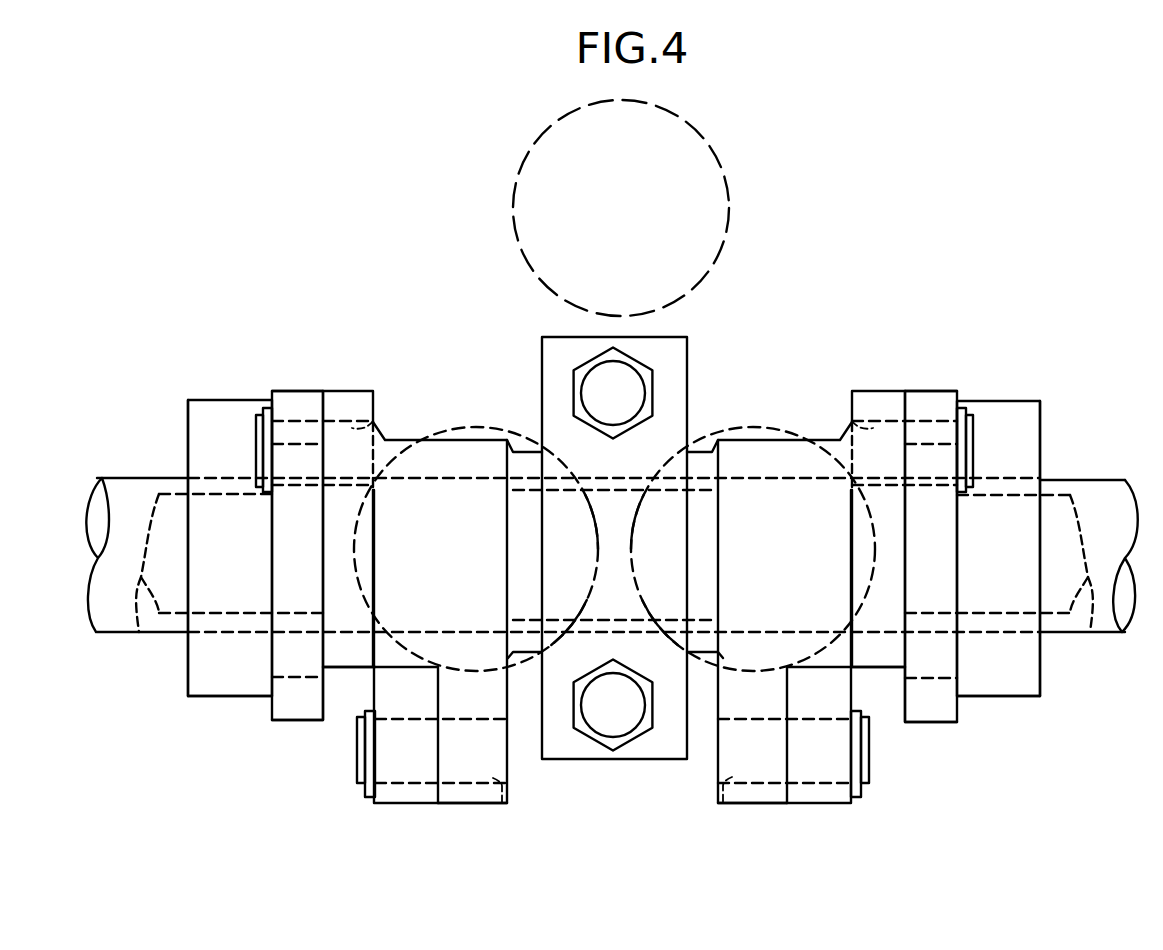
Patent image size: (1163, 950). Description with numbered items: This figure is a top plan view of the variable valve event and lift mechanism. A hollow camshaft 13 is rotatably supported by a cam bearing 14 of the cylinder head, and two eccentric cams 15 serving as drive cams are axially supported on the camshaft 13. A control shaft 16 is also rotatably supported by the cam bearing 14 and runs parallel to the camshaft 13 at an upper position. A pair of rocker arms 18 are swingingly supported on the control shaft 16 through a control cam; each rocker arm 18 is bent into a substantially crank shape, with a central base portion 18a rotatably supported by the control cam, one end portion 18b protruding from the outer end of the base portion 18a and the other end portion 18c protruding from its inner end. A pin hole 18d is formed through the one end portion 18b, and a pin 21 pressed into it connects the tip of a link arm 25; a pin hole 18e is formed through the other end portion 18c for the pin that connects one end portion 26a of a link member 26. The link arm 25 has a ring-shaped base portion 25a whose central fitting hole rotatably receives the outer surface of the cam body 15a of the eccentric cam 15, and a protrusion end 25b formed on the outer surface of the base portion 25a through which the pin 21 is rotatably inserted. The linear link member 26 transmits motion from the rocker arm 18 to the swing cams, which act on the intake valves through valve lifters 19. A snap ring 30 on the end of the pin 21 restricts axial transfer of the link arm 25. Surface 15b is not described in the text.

The camshaft 13 is at (122, 484).
The cam bearing 14 is at (692, 367).
The eccentric cam 15 is at (205, 698).
The cam body 15a is at (293, 655).
The outer surface of side plate 15b is at (198, 660).
The control shaft 16 is at (137, 633).
The rocker arm 18 is at (389, 438).
The base portion 18a is at (343, 660).
The one end portion 18b is at (354, 391).
The other end portion 18c is at (463, 806).
The pin hole 18d is at (373, 421).
The pin hole 18e is at (502, 806).
The valve lifter 19 is at (463, 427).
The pin 21 is at (256, 436).
The link arm 25 is at (303, 722).
The base portion 25a is at (315, 690).
The protrusion end 25b is at (305, 391).
The link member 26 is at (428, 807).
The end portion 26a is at (405, 790).
The snap ring 30 is at (262, 410).